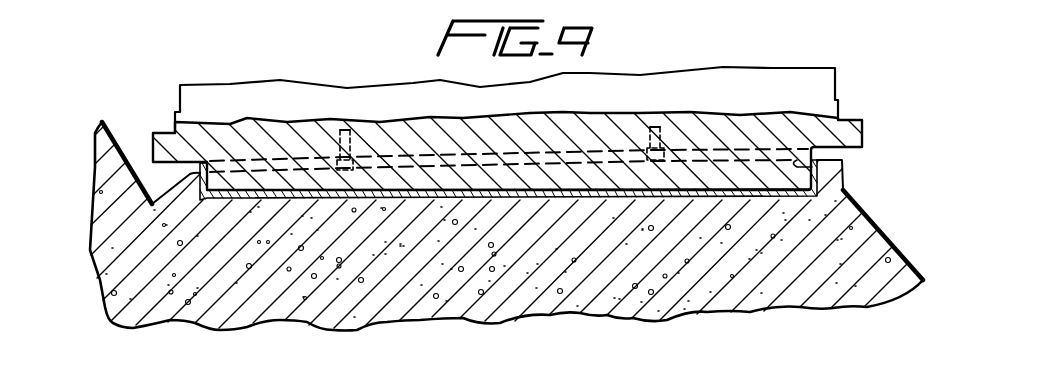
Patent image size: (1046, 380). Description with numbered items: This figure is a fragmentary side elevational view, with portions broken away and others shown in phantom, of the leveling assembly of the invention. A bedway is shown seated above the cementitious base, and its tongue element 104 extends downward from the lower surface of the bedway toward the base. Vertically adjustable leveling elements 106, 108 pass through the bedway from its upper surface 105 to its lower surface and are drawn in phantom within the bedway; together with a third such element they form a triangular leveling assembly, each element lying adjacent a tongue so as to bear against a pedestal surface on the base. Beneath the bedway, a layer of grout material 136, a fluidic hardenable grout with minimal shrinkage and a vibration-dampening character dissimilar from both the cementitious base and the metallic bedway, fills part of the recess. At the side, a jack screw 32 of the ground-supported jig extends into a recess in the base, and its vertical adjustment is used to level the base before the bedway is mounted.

The jack screw 32 is at (843, 173).
The tongue element 104 is at (508, 173).
The upper surface 105 is at (169, 116).
The leveling element 106 is at (347, 140).
The leveling element 108 is at (657, 140).
The grout material 136 is at (612, 193).